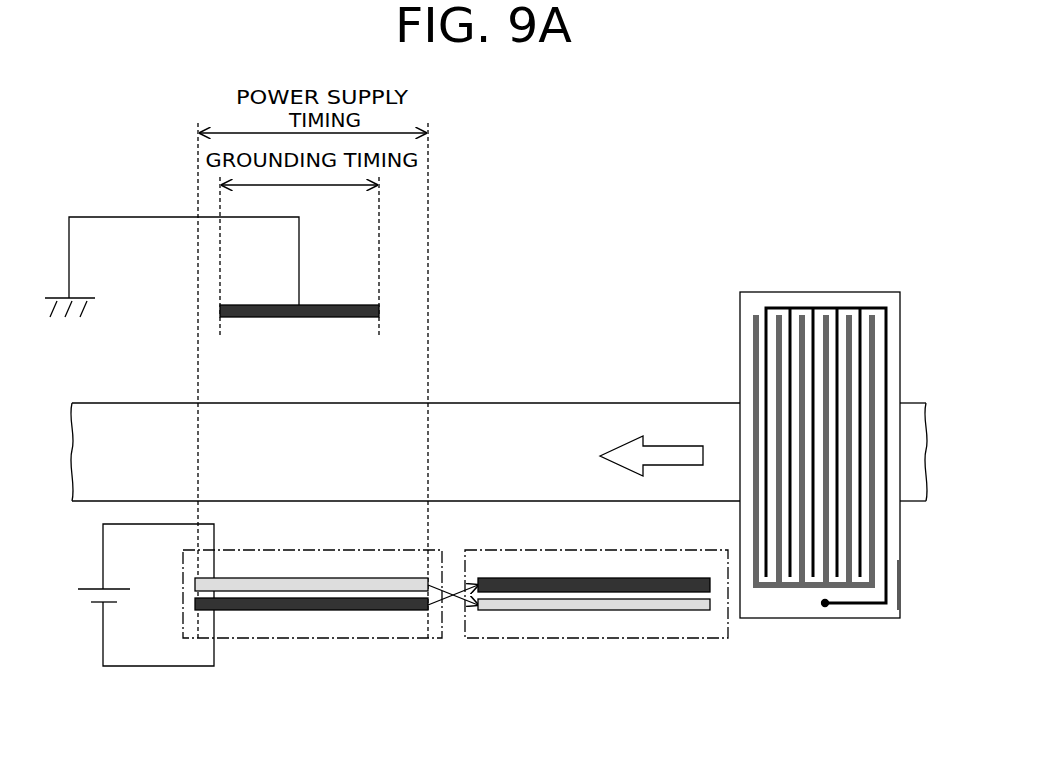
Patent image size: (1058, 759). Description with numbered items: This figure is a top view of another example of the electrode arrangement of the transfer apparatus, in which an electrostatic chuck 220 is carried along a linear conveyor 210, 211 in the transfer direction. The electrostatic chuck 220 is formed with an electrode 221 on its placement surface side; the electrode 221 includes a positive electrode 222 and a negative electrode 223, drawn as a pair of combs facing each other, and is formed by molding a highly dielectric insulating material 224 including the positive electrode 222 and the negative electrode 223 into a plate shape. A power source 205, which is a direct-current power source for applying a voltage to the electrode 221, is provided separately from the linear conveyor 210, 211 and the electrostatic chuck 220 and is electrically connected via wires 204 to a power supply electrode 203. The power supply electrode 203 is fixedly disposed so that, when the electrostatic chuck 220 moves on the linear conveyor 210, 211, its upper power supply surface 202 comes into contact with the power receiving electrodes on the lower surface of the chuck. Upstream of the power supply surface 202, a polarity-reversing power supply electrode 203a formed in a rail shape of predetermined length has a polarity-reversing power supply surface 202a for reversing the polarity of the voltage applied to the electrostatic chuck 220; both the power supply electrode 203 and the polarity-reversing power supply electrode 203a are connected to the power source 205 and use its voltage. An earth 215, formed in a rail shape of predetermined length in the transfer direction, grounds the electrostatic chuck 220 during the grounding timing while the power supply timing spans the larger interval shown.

The power supply surface 202 is at (258, 612).
The polarity-reversing power supply surface 202a is at (515, 612).
The power supply electrode 203 is at (352, 640).
The polarity-reversing power supply electrode 203a is at (635, 640).
The wires 204 is at (157, 667).
The power source 205 is at (92, 588).
The linear conveyor 210 is at (499, 417).
The belt surface 211 is at (559, 402).
The earth 215 is at (258, 303).
The electrostatic chuck 220 is at (900, 292).
The electrode 221 is at (826, 497).
The positive electrode 222 is at (850, 607).
The negative electrode 223 is at (753, 333).
The highly dielectric insulating material 224 is at (893, 588).